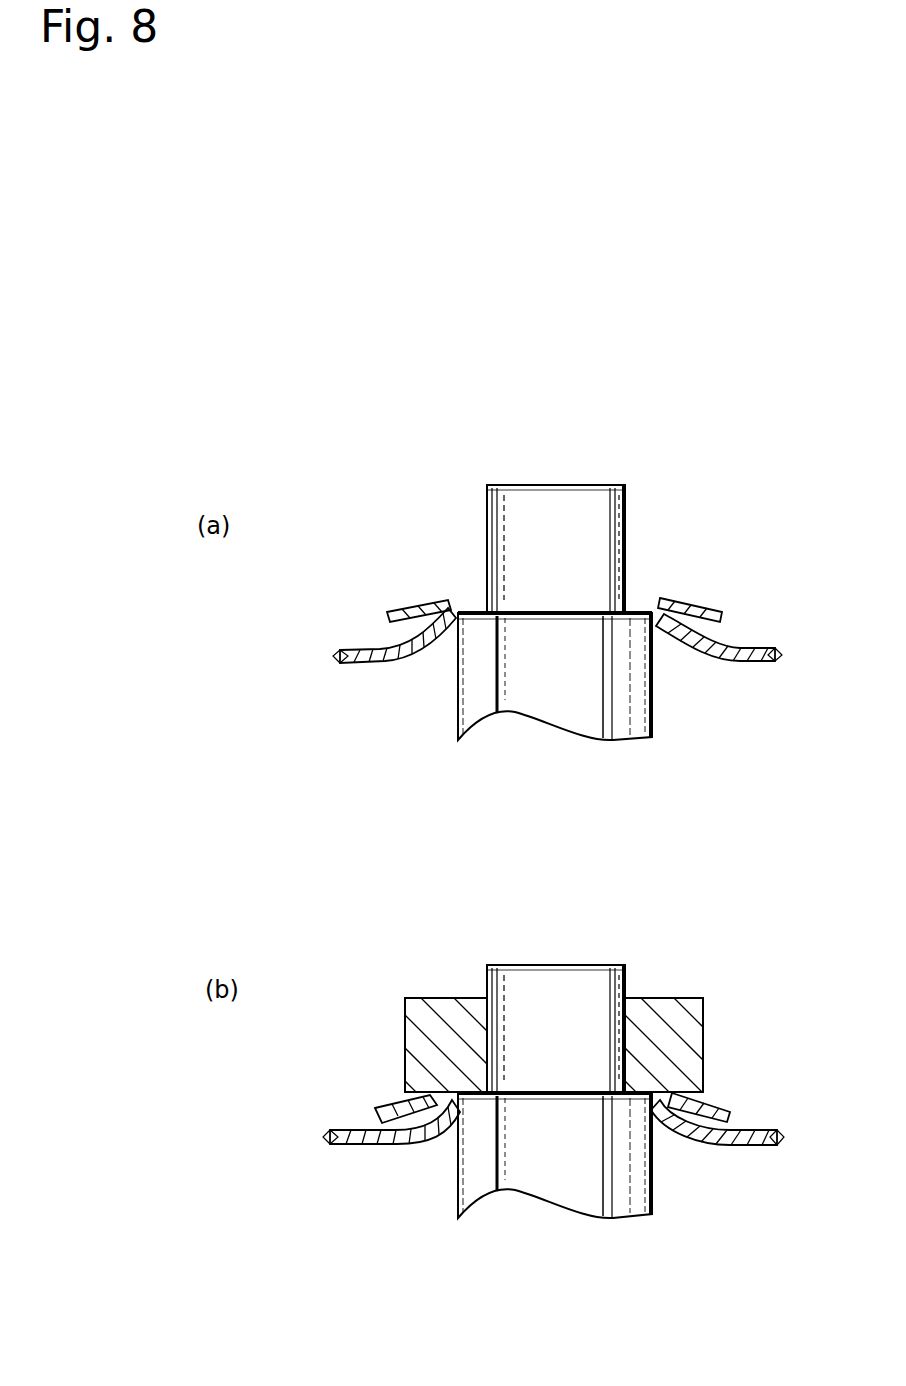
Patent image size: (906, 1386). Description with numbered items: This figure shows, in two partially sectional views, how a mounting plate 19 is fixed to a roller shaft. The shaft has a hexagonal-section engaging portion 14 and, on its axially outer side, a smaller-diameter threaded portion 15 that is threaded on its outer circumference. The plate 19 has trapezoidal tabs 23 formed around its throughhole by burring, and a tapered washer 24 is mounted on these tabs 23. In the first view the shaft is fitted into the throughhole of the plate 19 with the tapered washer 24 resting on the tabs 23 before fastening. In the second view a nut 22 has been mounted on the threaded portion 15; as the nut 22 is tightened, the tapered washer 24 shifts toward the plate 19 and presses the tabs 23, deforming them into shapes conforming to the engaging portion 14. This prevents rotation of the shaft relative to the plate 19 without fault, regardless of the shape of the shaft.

The engaging portion 14 is at (565, 710).
The threaded portion 15 is at (587, 503).
The plate 19 is at (553, 914).
The nut 22 is at (697, 1015).
The trapezoidal tabs 23 is at (437, 640).
The tapered washer 24 is at (418, 606).